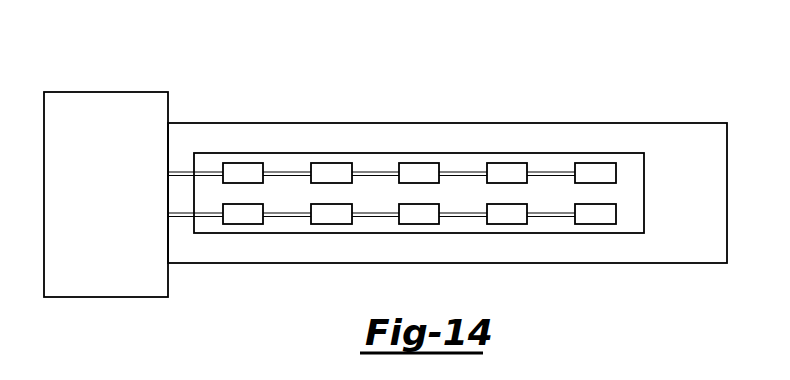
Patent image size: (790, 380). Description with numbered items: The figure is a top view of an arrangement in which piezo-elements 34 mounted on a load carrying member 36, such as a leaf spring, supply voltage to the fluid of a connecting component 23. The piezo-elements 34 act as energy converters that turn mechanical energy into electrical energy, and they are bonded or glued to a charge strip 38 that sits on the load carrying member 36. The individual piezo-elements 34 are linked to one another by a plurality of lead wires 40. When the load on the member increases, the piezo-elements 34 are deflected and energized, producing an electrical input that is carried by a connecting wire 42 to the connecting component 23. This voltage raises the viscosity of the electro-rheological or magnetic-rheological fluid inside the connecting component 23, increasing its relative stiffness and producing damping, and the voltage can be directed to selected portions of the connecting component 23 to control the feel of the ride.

The connecting component 23 is at (127, 117).
The piezo-elements 34 is at (508, 170).
The load carrying member 36 is at (687, 143).
The charge strip 38 is at (635, 200).
The lead wires 40 is at (375, 170).
The connecting wire 42 is at (182, 217).